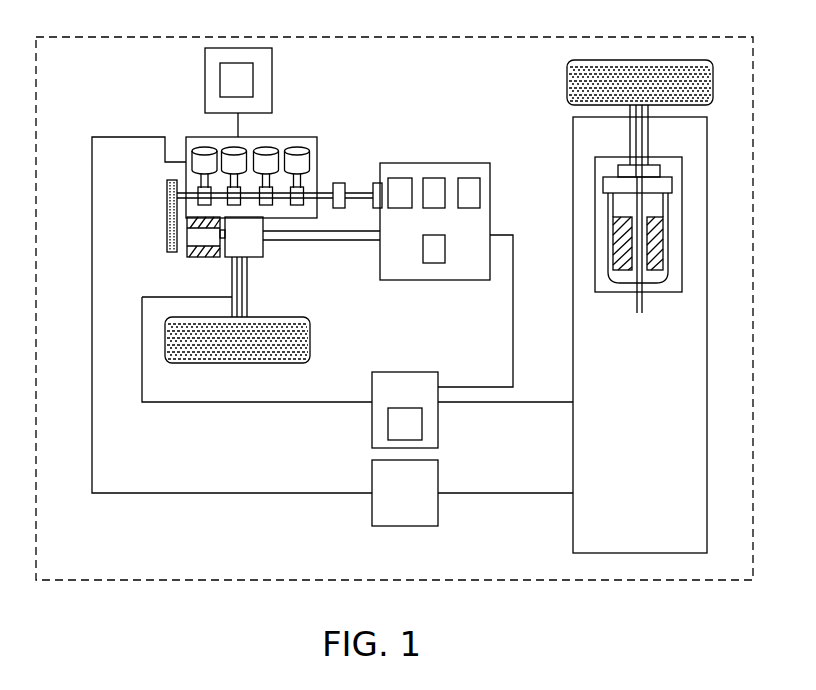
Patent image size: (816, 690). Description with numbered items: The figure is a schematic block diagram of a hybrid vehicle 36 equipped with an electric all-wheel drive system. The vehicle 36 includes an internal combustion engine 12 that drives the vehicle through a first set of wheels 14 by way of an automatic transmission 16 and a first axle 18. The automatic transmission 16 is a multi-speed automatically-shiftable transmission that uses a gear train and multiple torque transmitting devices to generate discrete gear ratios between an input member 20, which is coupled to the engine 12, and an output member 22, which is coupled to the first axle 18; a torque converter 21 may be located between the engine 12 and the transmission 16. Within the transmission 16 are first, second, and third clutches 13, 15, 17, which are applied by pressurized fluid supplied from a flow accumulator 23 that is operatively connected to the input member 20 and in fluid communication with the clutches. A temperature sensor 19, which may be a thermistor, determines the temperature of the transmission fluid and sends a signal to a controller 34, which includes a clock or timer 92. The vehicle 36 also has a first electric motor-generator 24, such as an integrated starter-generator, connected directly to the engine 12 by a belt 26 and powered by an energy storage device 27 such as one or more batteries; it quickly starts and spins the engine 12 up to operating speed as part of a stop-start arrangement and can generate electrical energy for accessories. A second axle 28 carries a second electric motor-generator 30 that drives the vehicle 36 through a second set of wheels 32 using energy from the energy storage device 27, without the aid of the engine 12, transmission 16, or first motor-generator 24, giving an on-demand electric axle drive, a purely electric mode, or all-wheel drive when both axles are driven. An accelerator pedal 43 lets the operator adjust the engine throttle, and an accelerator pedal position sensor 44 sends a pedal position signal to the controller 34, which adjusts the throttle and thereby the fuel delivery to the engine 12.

The internal combustion engine 12 is at (279, 126).
The first clutch 13 is at (400, 178).
The first set of wheels 14 is at (237, 363).
The second clutch 15 is at (436, 178).
The automatic transmission 16 is at (495, 122).
The third clutch 17 is at (470, 178).
The first axle 18 is at (253, 258).
The temperature sensor 19 is at (445, 257).
The input member 20 is at (360, 192).
The torque converter 21 is at (337, 183).
The output member 22 is at (318, 244).
The flow accumulator 23 is at (379, 183).
The first electric motor-generator 24 is at (195, 258).
The belt 26 is at (167, 213).
The energy storage device 27 is at (417, 504).
The second axle 28 is at (640, 553).
The second electric motor-generator 30 is at (682, 225).
The second set of wheels 32 is at (641, 60).
The controller 34 is at (417, 402).
The hybrid vehicle 36 is at (243, 580).
The accelerator pedal 43 is at (205, 103).
The accelerator pedal position sensor 44 is at (247, 91).
The clock or timer 92 is at (417, 435).